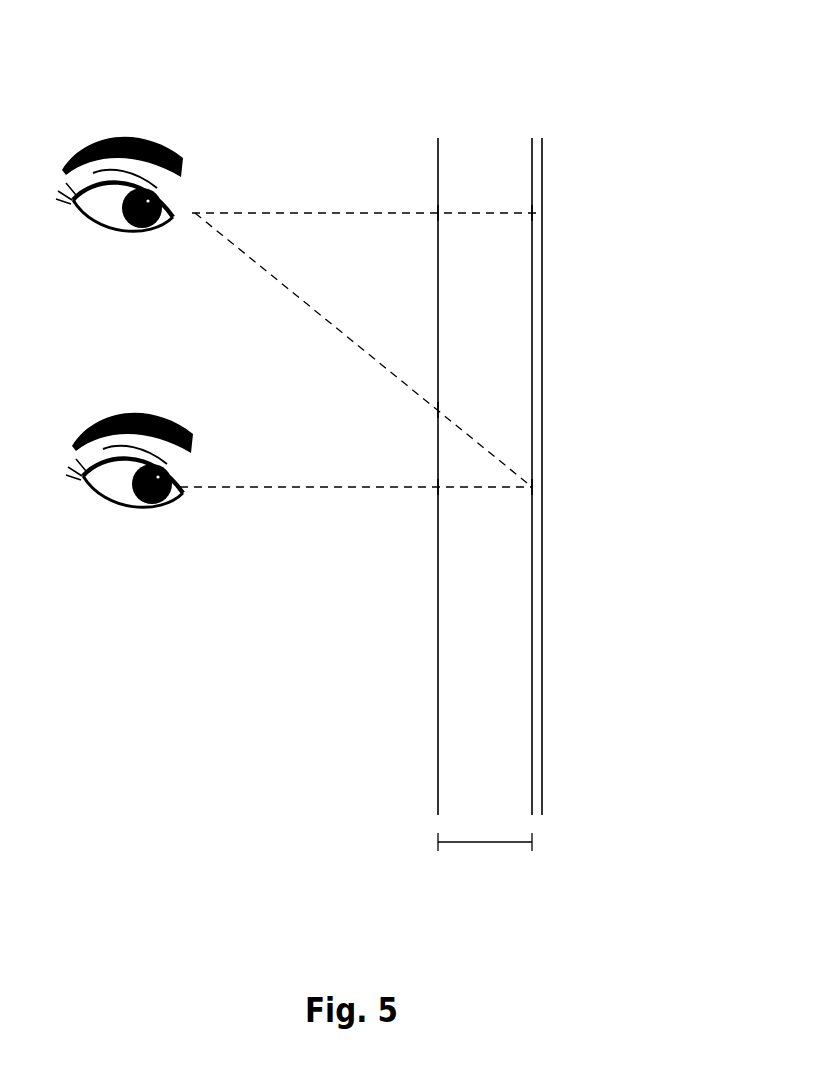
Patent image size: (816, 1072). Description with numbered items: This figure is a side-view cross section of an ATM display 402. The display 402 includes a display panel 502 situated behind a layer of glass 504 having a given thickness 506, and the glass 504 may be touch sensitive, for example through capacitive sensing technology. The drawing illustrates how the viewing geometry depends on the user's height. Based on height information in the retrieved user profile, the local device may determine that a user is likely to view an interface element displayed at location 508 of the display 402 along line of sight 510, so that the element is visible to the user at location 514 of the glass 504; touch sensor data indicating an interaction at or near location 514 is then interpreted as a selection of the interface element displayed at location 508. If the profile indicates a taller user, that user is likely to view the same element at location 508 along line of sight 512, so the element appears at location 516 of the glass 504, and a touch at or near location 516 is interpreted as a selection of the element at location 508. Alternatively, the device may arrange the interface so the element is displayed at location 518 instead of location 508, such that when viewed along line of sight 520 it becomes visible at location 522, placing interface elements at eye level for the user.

The display 402 is at (478, 68).
The display panel 502 is at (542, 712).
The layer of glass 504 is at (438, 752).
The thickness 506 is at (487, 843).
The location 508 is at (532, 487).
The line of sight 510 is at (262, 488).
The line of sight 512 is at (268, 272).
The location 514 is at (438, 488).
The location 516 is at (438, 410).
The location 518 is at (542, 212).
The line of sight 520 is at (438, 214).
The location 522 is at (438, 210).